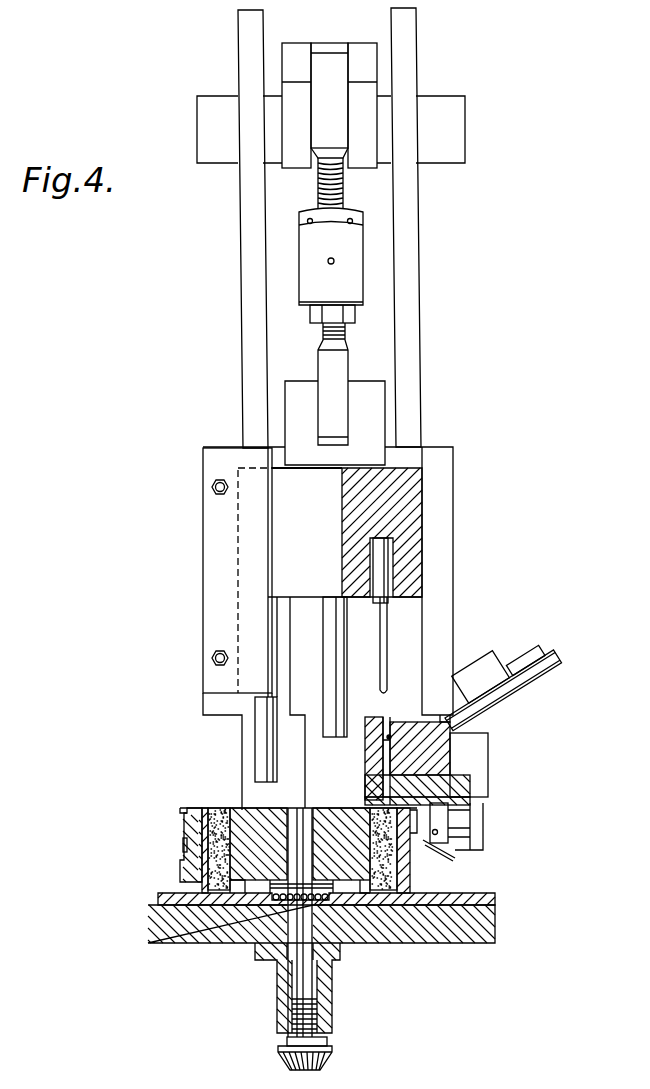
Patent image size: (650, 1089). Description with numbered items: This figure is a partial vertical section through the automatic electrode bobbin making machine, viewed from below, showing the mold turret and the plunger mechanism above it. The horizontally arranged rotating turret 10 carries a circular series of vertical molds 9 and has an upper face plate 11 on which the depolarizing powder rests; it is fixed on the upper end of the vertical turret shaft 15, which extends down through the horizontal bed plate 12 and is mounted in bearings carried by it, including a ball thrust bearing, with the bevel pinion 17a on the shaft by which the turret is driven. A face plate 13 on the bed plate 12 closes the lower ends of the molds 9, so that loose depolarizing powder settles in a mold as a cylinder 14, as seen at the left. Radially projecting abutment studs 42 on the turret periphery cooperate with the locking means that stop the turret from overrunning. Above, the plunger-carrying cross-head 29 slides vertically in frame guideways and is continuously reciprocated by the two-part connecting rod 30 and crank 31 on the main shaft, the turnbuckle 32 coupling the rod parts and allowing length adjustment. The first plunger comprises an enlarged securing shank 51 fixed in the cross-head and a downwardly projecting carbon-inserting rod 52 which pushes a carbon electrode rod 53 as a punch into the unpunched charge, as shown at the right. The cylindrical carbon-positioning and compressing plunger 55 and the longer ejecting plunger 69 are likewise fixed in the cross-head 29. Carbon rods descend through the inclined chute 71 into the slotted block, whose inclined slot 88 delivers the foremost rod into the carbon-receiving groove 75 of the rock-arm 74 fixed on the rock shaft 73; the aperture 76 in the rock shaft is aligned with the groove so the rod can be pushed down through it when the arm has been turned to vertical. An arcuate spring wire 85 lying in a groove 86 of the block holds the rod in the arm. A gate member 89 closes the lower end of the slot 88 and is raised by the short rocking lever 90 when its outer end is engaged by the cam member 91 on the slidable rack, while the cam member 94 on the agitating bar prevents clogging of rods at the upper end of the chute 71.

The vertical molds 9 is at (209, 812).
The rotating turret 10 is at (181, 870).
The upper face plate 11 is at (201, 810).
The bed plate 12 is at (496, 916).
The face plate 13 is at (496, 894).
The cylinder of loose depolarizing powder 14 is at (182, 843).
The turret shaft 15 is at (293, 812).
The bevel pinion 17a is at (284, 1061).
The plunger-carrying cross-head 29 is at (404, 477).
The connecting rod 30 is at (327, 53).
The crank 31 is at (358, 48).
The turnbuckle 32 is at (363, 242).
The abutment studs 42 is at (184, 842).
The securing shank 51 is at (374, 601).
The carbon-inserting rod 52 is at (388, 632).
The carbon electrode rod 53 is at (382, 748).
The carbon-positioning and compressing plunger 55 is at (324, 633).
The ejecting plunger 69 is at (258, 719).
The inclined chute 71 is at (526, 689).
The rock shaft 73 is at (470, 788).
The carbon-positioning rock-arm 74 is at (372, 717).
The carbon-receiving groove 75 is at (388, 722).
The aperture 76 is at (366, 792).
The arcuate spring wire 85 is at (397, 733).
The groove 86 is at (370, 763).
The inclined slot 88 is at (451, 750).
The gate member 89 is at (372, 801).
The rocking lever 90 is at (455, 852).
The cam member 91 is at (472, 832).
The cam member 94 is at (490, 657).